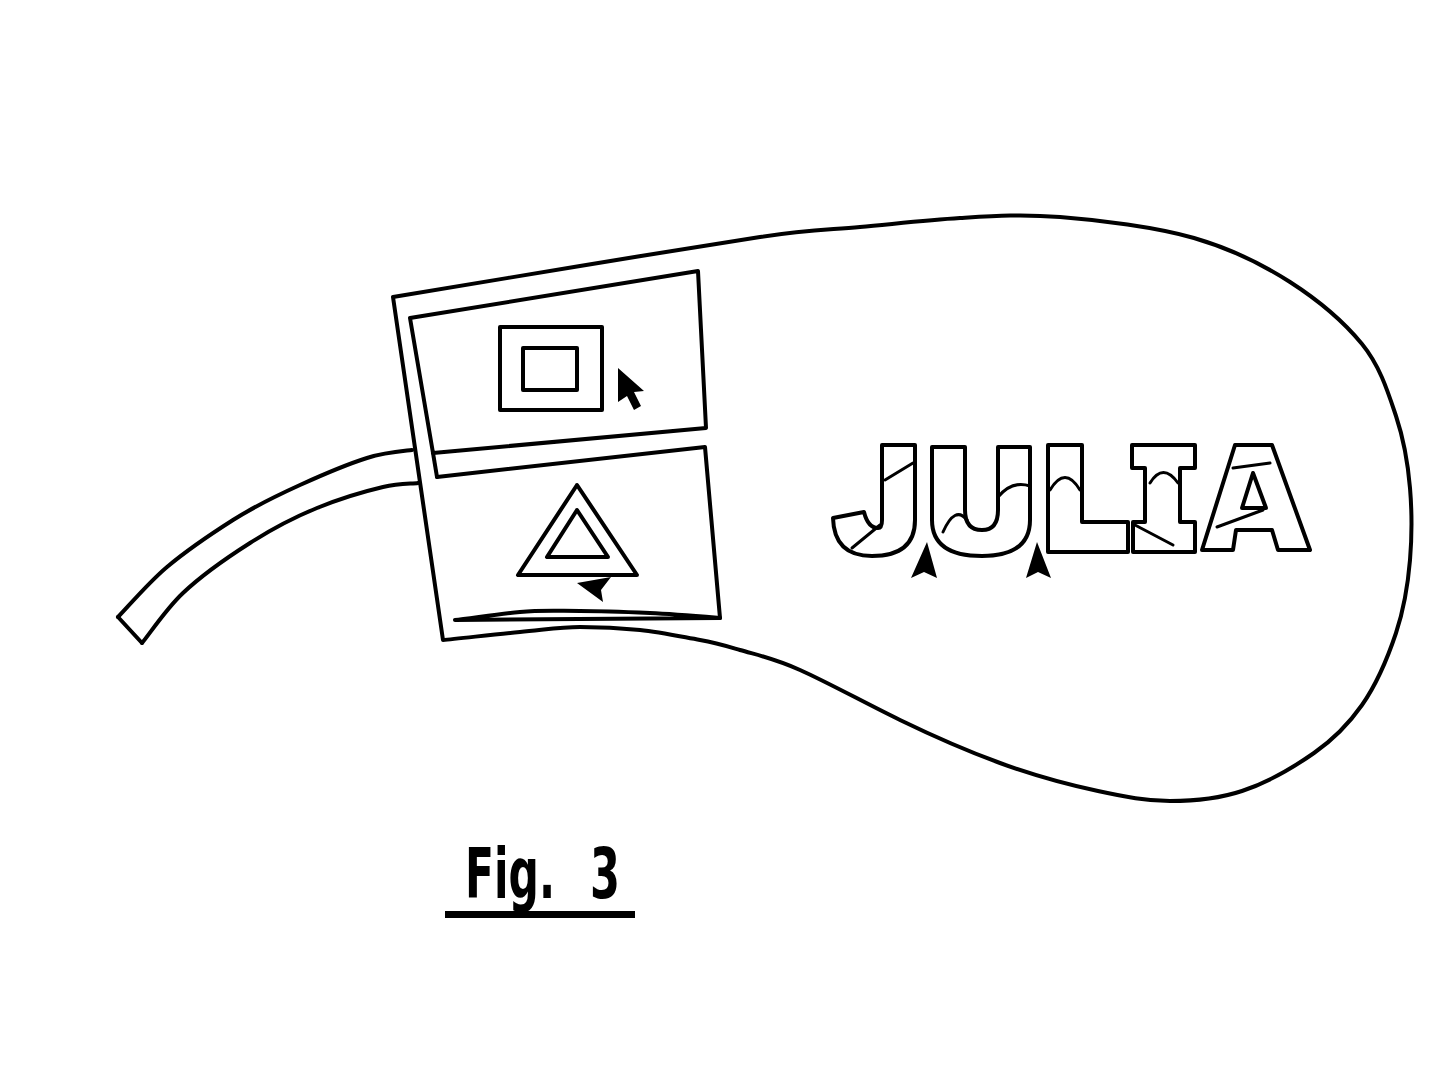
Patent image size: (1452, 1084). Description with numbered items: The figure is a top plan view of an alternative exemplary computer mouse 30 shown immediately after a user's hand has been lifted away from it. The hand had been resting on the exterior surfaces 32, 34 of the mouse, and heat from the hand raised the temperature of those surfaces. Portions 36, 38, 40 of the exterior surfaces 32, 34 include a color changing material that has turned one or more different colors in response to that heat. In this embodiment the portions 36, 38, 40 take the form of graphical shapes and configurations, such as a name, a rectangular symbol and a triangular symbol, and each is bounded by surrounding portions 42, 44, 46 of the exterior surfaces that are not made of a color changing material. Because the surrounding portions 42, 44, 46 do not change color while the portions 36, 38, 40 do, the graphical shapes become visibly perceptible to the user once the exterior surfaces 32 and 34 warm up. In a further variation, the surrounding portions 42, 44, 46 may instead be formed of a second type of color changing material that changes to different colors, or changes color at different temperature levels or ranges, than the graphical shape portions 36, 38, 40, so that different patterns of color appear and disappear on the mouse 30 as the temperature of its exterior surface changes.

The computer mouse 30 is at (765, 445).
The exterior surface 32 is at (1163, 329).
The exterior surface 34 is at (687, 336).
The portion of the exterior surface 36 is at (850, 478).
The portion of the exterior surface 38 is at (497, 392).
The portion of the exterior surface 40 is at (551, 523).
The surrounding portion 42 is at (1038, 572).
The surrounding portion 44 is at (637, 393).
The surrounding portion 46 is at (601, 590).